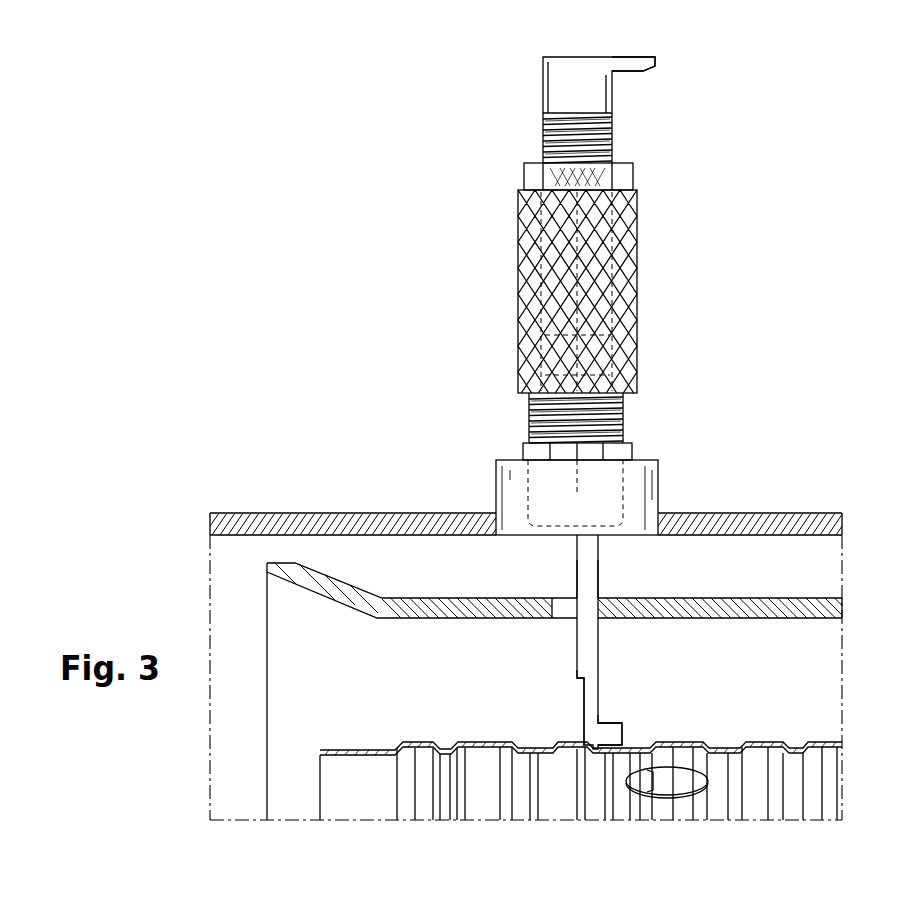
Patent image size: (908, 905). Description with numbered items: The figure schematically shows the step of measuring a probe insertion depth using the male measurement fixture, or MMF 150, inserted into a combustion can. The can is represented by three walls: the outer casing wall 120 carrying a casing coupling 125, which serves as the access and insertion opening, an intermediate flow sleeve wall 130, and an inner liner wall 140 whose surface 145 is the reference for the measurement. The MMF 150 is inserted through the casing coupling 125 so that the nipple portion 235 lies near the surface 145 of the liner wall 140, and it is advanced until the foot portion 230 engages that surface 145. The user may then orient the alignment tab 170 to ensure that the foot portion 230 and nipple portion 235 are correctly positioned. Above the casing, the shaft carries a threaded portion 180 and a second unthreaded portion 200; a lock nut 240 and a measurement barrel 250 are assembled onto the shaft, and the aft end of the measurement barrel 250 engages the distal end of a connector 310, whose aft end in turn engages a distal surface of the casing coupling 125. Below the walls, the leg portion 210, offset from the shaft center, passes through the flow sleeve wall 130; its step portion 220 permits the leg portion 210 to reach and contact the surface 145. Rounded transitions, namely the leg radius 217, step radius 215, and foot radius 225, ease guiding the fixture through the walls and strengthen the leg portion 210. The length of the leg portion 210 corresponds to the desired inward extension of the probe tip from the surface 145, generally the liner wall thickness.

The casing wall 120 is at (820, 513).
The casing coupling 125 is at (497, 493).
The flow sleeve wall 130 is at (810, 598).
The liner wall 140 is at (812, 722).
The surface 145 is at (755, 742).
The male measurement fixture (MMF) 150 is at (395, 200).
The alignment tab 170 is at (645, 66).
The threaded portion 180 is at (537, 128).
The second unthreaded portion 200 is at (537, 85).
The leg portion 210 is at (607, 668).
The step radius 215 is at (578, 690).
The leg radius 217 is at (575, 570).
The step portion 220 is at (583, 713).
The foot radius 225 is at (625, 732).
The foot portion 230 is at (612, 723).
The nipple portion 235 is at (593, 748).
The lock nut 240 is at (523, 178).
The measurement barrel 250 is at (503, 280).
The connector 310 is at (530, 420).